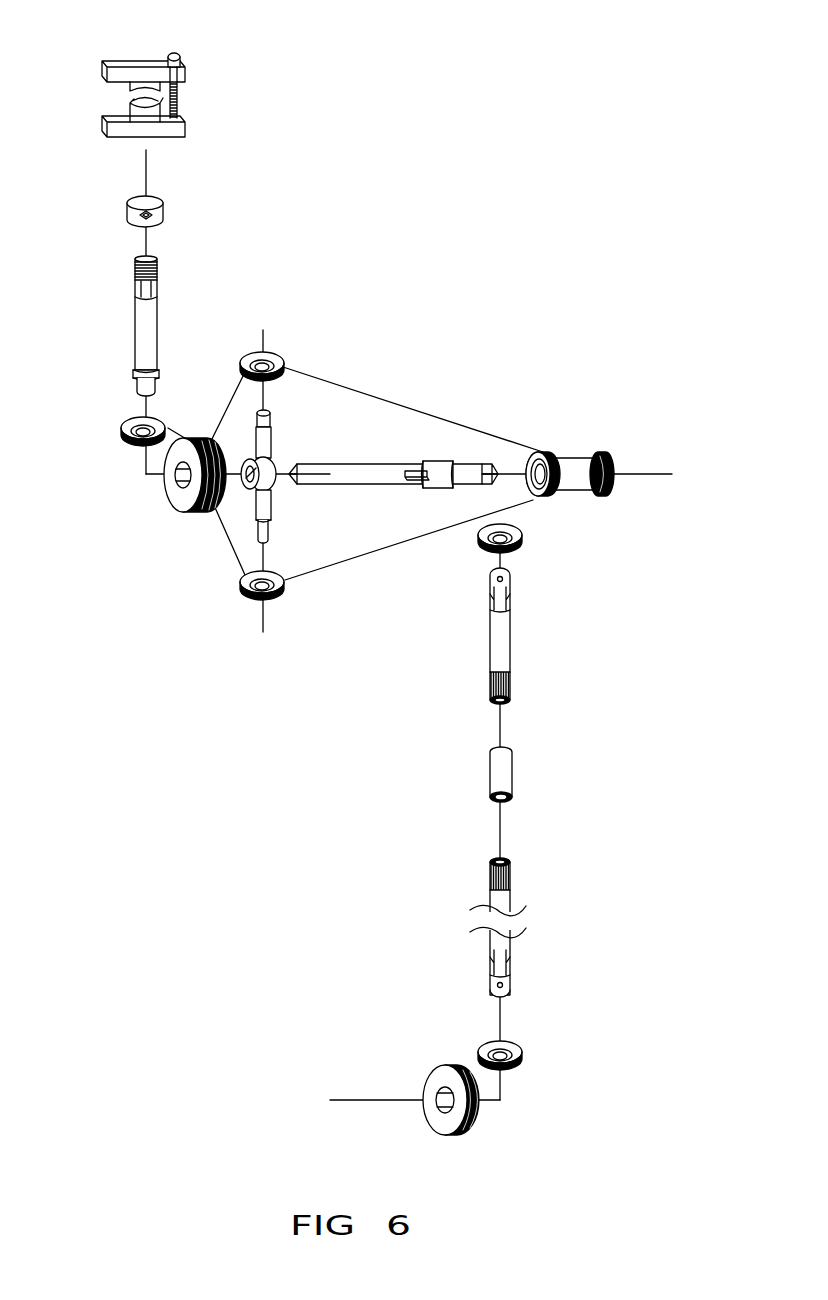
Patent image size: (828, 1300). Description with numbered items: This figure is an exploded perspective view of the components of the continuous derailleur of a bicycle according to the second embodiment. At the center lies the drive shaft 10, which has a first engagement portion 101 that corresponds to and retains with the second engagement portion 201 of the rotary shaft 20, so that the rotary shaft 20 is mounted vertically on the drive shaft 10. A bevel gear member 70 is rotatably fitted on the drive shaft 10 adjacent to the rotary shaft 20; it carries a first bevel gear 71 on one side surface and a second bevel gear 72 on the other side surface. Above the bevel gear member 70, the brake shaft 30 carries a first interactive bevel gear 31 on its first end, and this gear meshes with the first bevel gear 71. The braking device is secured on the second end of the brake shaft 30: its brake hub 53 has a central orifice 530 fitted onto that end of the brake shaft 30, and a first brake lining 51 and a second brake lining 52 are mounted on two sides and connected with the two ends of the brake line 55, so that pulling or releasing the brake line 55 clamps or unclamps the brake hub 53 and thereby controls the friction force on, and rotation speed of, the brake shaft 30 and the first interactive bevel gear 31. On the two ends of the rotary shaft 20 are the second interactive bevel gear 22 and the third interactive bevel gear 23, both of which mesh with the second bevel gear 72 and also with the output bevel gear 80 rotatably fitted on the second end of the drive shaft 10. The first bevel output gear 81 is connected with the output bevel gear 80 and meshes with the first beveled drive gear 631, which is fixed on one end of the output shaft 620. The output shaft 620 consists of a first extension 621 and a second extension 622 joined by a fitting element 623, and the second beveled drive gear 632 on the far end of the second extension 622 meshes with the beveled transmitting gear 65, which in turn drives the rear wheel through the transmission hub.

The drive shaft 10 is at (393, 444).
The first engagement portion 101 is at (413, 473).
The rotary shaft 20 is at (272, 478).
The second engagement portion 201 is at (247, 464).
The second interactive bevel gear 22 is at (283, 593).
The third interactive bevel gear 23 is at (280, 350).
The brake shaft 30 is at (145, 340).
The first interactive bevel gear 31 is at (167, 420).
The first brake lining 51 is at (148, 115).
The second brake lining 52 is at (145, 77).
The brake hub 53 is at (156, 232).
The central orifice 530 is at (145, 226).
The brake line 55 is at (176, 100).
The beveled transmitting gear 65 is at (472, 1068).
The bevel gear member 70 is at (169, 540).
The first bevel gear 71 is at (193, 512).
The second bevel gear 72 is at (208, 505).
The output bevel gear 80 is at (593, 481).
The first bevel output gear 81 is at (607, 500).
The output shaft 620 is at (522, 782).
The first extension 621 is at (502, 630).
The second extension 622 is at (508, 948).
The fitting element 623 is at (505, 768).
The first beveled drive gear 631 is at (520, 545).
The second beveled drive gear 632 is at (520, 1045).